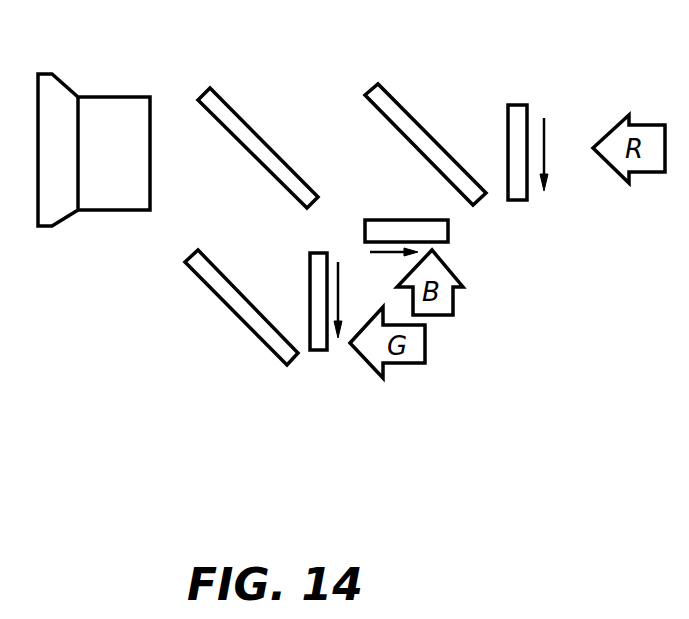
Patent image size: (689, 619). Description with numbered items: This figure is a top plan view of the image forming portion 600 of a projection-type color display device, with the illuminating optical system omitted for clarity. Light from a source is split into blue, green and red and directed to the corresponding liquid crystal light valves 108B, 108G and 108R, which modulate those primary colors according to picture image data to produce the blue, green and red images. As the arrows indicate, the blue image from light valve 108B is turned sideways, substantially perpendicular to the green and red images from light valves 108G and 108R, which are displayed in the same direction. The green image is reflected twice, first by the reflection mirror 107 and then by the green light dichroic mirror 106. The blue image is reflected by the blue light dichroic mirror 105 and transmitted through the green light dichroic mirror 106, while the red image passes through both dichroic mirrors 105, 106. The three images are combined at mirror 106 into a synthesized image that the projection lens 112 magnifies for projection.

The projection lens 112 is at (128, 107).
The green light dichroic mirror 106 is at (250, 86).
The blue light dichroic mirror 105 is at (418, 78).
The reflection mirror 107 is at (250, 328).
The liquid crystal light valve 108R is at (512, 105).
The liquid crystal light valve 108G is at (325, 350).
The liquid crystal light valve 108B is at (446, 232).
The image forming portion 600 is at (514, 358).